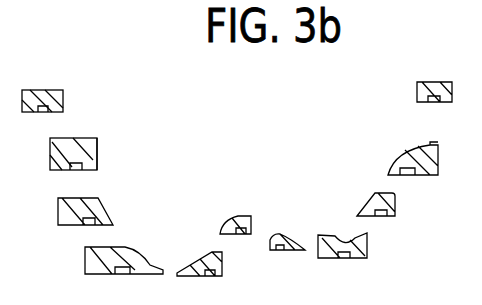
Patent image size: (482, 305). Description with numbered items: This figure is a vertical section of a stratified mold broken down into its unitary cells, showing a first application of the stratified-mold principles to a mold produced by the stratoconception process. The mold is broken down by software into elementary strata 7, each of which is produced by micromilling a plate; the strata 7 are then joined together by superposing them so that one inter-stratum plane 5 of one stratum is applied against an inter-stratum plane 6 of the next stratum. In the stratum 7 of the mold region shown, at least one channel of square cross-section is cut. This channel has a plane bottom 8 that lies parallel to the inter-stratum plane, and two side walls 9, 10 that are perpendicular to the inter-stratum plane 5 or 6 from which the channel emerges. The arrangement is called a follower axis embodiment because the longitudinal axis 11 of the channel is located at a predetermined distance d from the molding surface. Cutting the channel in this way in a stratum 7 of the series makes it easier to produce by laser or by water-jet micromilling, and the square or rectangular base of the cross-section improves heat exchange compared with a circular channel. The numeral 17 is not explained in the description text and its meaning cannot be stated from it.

The sequence of forming sections 17 is at (2, 115).
The inter-stratum plane 5 is at (38, 112).
The plane bottom 8 is at (42, 93).
The side wall 9 is at (43, 113).
The inter-stratum plane 6 is at (88, 136).
The side wall 10 is at (86, 135).
The stratum 7 is at (97, 152).
The predetermined distance d is at (104, 156).
The longitudinal axis 11 is at (72, 170).